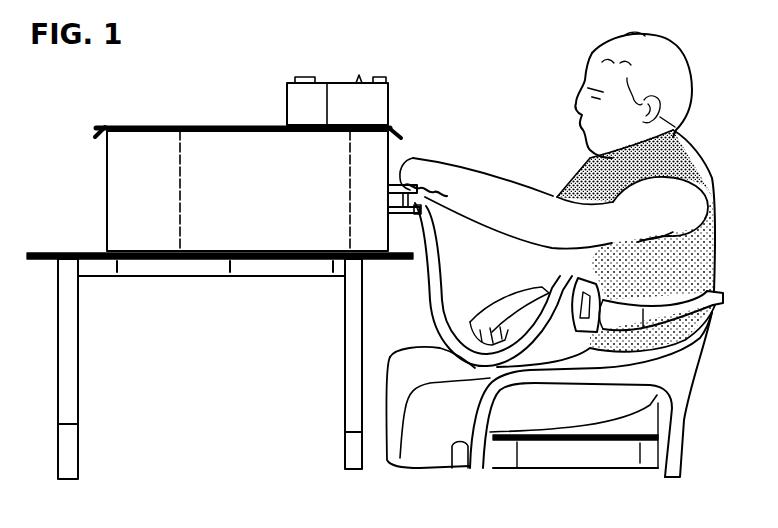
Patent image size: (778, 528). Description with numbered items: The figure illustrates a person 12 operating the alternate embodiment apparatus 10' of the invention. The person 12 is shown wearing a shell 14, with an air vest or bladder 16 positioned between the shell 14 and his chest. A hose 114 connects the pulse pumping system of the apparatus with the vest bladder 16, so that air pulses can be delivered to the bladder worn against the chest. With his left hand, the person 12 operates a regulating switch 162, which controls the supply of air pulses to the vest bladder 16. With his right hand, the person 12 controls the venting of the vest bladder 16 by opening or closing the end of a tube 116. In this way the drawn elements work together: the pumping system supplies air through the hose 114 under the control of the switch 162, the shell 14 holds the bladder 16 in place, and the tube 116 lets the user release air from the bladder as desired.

The alternate embodiment apparatus 10' is at (269, 133).
The person 12 is at (686, 72).
The switch 162 is at (400, 178).
The hose 114 is at (445, 314).
The tube 116 is at (553, 267).
The air vest or bladder 16 is at (580, 336).
The shell 14 is at (623, 347).